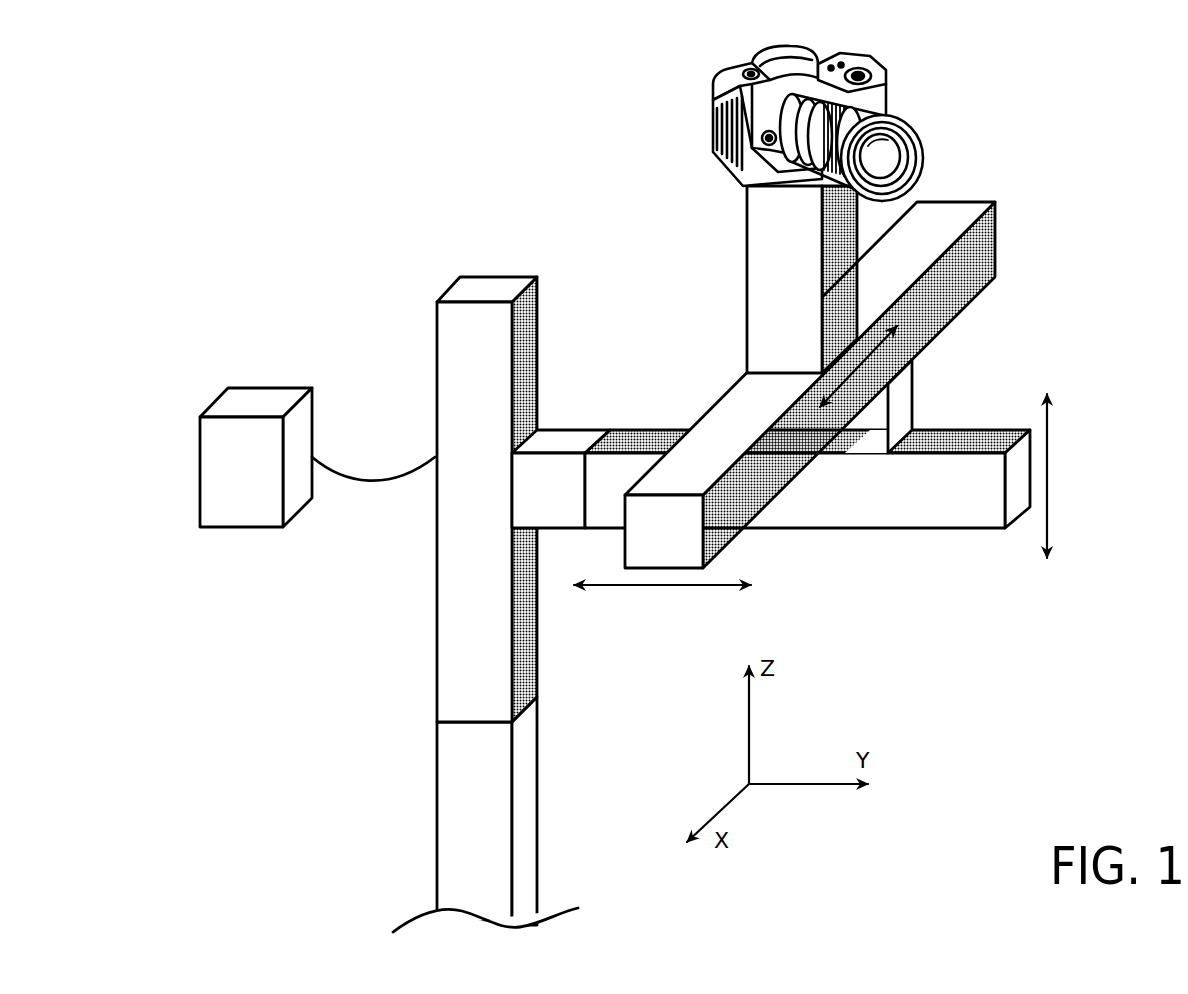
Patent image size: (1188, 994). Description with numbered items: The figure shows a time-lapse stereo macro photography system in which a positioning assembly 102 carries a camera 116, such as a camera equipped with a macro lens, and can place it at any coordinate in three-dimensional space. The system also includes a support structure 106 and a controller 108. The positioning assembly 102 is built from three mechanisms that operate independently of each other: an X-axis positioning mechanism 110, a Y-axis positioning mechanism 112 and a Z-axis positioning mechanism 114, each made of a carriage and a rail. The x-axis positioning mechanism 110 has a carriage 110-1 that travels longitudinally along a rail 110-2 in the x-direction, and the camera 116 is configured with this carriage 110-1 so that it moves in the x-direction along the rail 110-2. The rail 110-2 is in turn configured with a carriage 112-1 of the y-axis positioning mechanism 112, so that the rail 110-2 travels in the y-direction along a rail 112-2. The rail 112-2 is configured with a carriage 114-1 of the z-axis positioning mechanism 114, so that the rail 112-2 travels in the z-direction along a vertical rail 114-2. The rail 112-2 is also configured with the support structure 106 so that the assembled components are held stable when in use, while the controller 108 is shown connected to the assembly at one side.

The positioning assembly 102 is at (368, 250).
The support structure 106 is at (465, 843).
The controller 108 is at (232, 470).
The X-axis positioning mechanism 110 is at (1036, 257).
The carriage 110-1 is at (787, 275).
The rail 110-2 is at (925, 227).
The Y-axis positioning mechanism 112 is at (835, 556).
The carriage 112-1 is at (900, 396).
The rail 112-2 is at (950, 498).
The Z-axis positioning mechanism 114 is at (415, 528).
The carriage 114-1 is at (578, 445).
The rail 114-2 is at (463, 418).
The camera 116 is at (876, 45).